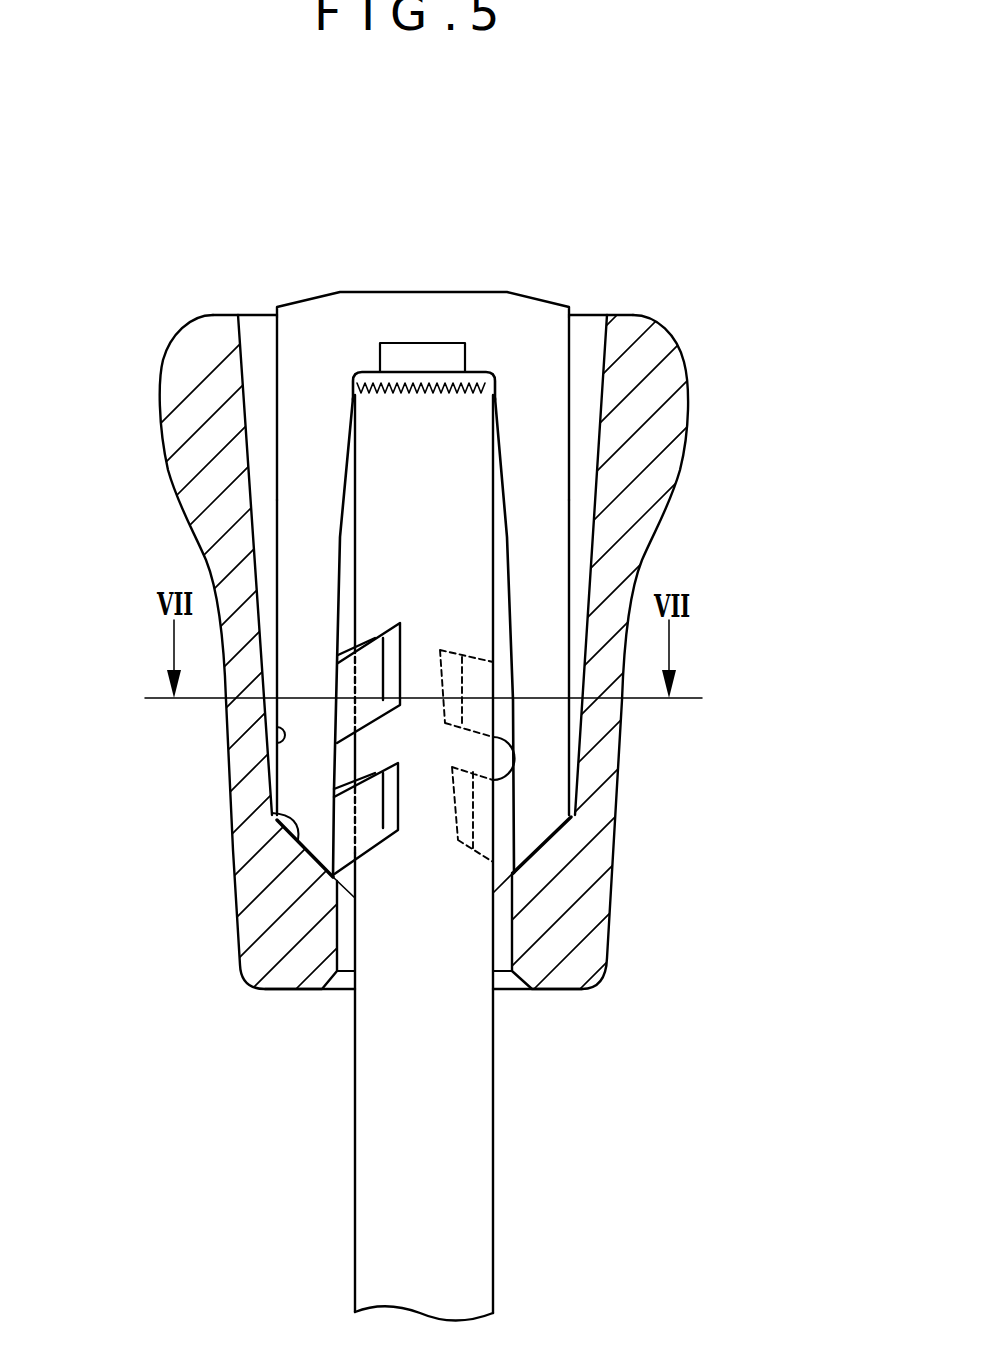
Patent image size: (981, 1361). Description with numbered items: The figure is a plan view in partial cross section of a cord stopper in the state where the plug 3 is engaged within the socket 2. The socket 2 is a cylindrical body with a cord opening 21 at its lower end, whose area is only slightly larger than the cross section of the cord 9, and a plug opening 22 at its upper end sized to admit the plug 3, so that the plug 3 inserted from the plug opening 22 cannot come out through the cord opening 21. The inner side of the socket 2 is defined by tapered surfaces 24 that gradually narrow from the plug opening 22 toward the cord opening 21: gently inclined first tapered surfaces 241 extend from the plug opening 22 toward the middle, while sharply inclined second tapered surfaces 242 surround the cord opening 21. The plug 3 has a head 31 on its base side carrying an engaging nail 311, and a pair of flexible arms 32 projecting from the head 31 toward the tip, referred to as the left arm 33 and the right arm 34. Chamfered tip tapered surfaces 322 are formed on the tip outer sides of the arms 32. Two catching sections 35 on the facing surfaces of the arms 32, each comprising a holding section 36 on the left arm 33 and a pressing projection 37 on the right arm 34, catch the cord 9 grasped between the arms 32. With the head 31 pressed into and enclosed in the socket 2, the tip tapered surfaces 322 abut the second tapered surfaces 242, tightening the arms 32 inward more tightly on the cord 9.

The socket 2 is at (690, 382).
The cord opening 21 is at (331, 1010).
The plug opening 22 is at (255, 290).
The tapered surfaces 24 is at (98, 717).
The first tapered surface 241 is at (277, 731).
The second tapered surface 242 is at (272, 817).
The plug 3 is at (552, 297).
The head 31 is at (495, 300).
The engaging nail 311 is at (409, 345).
The arm 32 is at (290, 477).
The left arm 33 is at (290, 530).
The right arm 34 is at (553, 533).
The tip tapered surface 322 is at (553, 843).
The catching section 35 is at (477, 558).
The holding section 36 is at (362, 648).
The pressing projection 37 is at (505, 672).
The cord 9 is at (470, 1155).